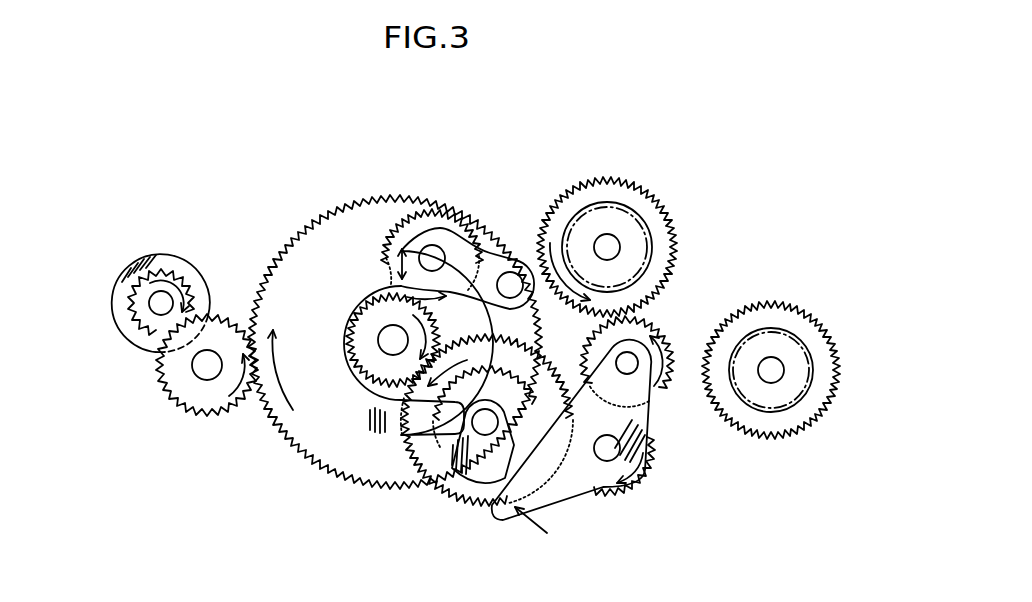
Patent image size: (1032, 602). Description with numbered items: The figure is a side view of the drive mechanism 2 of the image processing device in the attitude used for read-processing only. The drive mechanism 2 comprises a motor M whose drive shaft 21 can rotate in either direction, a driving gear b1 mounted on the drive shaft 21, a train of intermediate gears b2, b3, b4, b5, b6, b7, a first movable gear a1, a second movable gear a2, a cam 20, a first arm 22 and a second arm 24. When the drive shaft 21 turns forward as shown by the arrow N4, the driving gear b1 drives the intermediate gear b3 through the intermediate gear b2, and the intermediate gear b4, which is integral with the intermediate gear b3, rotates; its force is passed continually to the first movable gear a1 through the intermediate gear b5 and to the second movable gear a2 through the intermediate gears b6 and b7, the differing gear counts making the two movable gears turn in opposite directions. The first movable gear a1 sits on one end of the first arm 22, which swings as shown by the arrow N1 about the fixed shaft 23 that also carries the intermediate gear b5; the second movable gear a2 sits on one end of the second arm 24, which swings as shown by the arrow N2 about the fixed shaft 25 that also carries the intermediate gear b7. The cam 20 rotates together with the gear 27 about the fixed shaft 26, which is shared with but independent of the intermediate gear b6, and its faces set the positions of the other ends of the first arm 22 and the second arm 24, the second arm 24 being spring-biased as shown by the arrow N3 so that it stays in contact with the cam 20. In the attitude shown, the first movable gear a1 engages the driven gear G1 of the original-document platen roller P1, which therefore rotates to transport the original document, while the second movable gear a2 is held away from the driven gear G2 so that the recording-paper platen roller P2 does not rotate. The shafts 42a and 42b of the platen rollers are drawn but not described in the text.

The drive mechanism 2 is at (395, 302).
The cam 20 is at (487, 462).
The drive shaft 21 is at (150, 304).
The first arm 22 is at (368, 270).
The fixed shaft 23 is at (433, 250).
The second arm 24 is at (558, 490).
The fixed shaft 25 is at (603, 455).
The fixed shaft 26 is at (453, 447).
The gear 27 is at (430, 407).
The first spool shaft 42a is at (604, 236).
The second spool shaft 42b is at (771, 356).
The first movable gear a1 is at (522, 252).
The second movable gear a2 is at (653, 388).
The driving gear b1 is at (131, 334).
The intermediate gear b2 is at (202, 398).
The intermediate gear b3 is at (328, 248).
The intermediate gear b4 is at (368, 327).
The intermediate gear b5 is at (422, 217).
The intermediate gear b6 is at (462, 490).
The intermediate gear b7 is at (610, 490).
The driven gear G1 is at (637, 219).
The driven gear G2 is at (787, 368).
The motor M is at (118, 290).
The arrow N1 is at (426, 205).
The arrow N2 is at (633, 473).
The arrow N3 is at (527, 532).
The arrow N4 is at (187, 287).
The original-document platen roller P1 is at (645, 228).
The recording-paper platen roller P2 is at (805, 401).